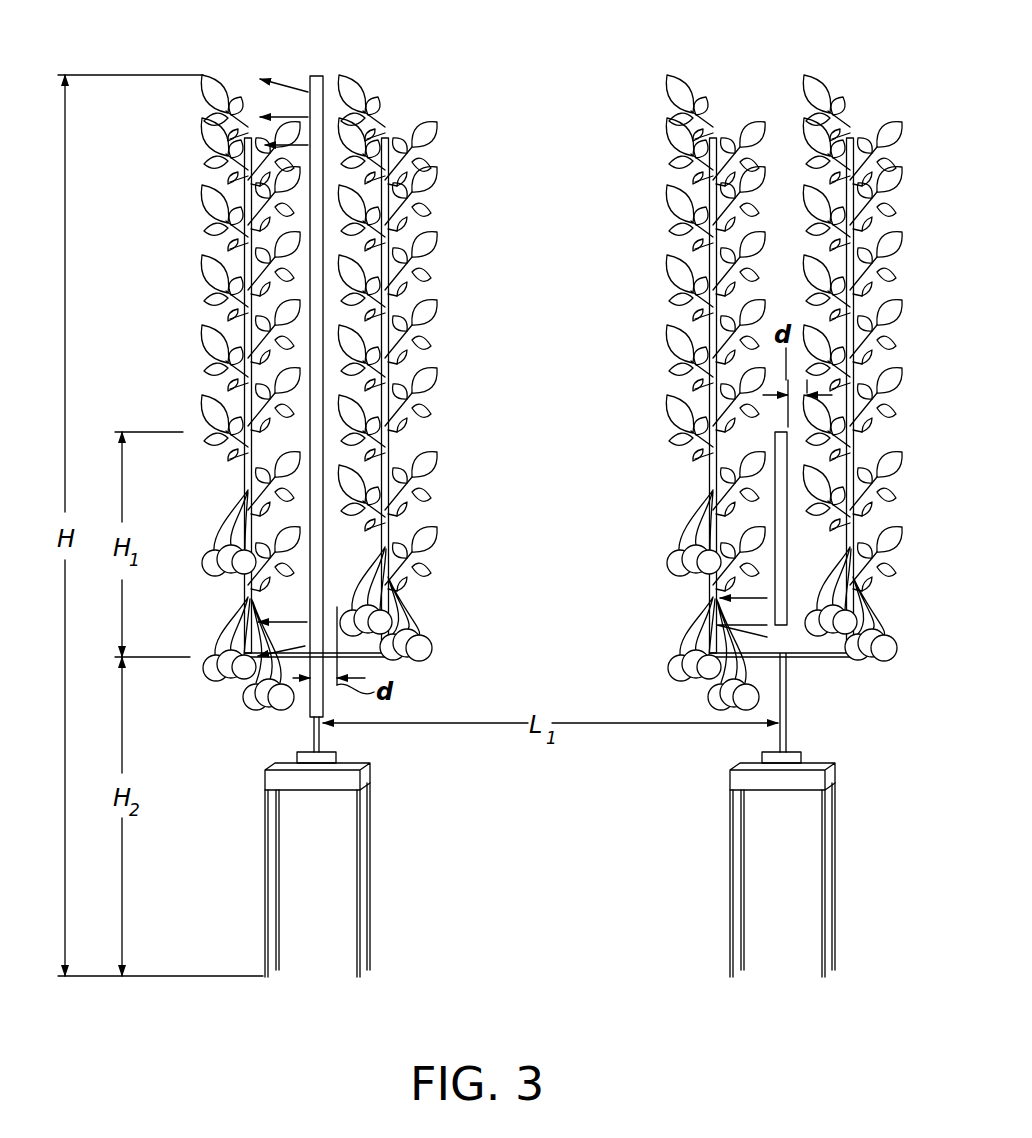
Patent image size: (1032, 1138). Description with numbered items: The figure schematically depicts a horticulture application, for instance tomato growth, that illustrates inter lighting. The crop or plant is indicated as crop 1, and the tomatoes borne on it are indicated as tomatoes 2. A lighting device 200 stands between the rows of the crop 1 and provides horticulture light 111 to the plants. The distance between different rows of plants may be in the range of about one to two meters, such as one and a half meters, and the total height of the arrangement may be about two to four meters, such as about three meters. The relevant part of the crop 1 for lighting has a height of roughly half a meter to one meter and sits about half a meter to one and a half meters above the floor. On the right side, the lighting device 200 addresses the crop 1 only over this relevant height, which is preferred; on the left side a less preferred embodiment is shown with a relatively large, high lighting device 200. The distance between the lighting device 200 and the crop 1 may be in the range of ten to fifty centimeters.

The crop 1 is at (460, 270).
The tomatoes 2 is at (767, 697).
The horticulture light 111 is at (290, 82).
The lighting device 200 is at (337, 510).